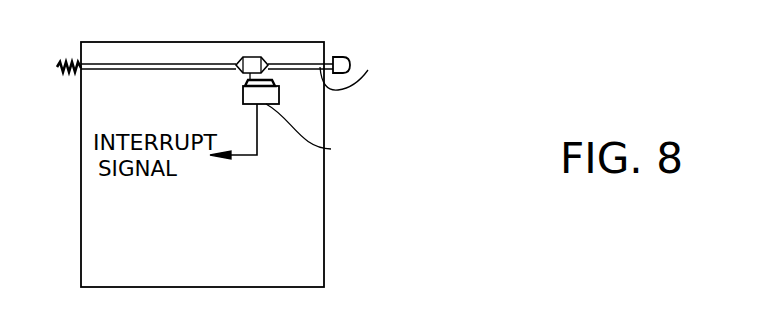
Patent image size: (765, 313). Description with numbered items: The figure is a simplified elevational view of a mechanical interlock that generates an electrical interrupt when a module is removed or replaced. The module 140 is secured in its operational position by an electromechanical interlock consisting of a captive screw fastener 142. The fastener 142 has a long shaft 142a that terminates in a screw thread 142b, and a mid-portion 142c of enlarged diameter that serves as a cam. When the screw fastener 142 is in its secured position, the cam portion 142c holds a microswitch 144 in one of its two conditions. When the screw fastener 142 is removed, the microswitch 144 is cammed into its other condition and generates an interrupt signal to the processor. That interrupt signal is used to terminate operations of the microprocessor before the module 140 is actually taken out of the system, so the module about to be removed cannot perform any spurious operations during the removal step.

The module 140 is at (324, 236).
The captive screw fastener 142 is at (294, 47).
The long shaft 142a is at (133, 66).
The screw thread 142b is at (55, 63).
The mid-portion (cam) 142c is at (248, 57).
The microswitch 144 is at (279, 91).